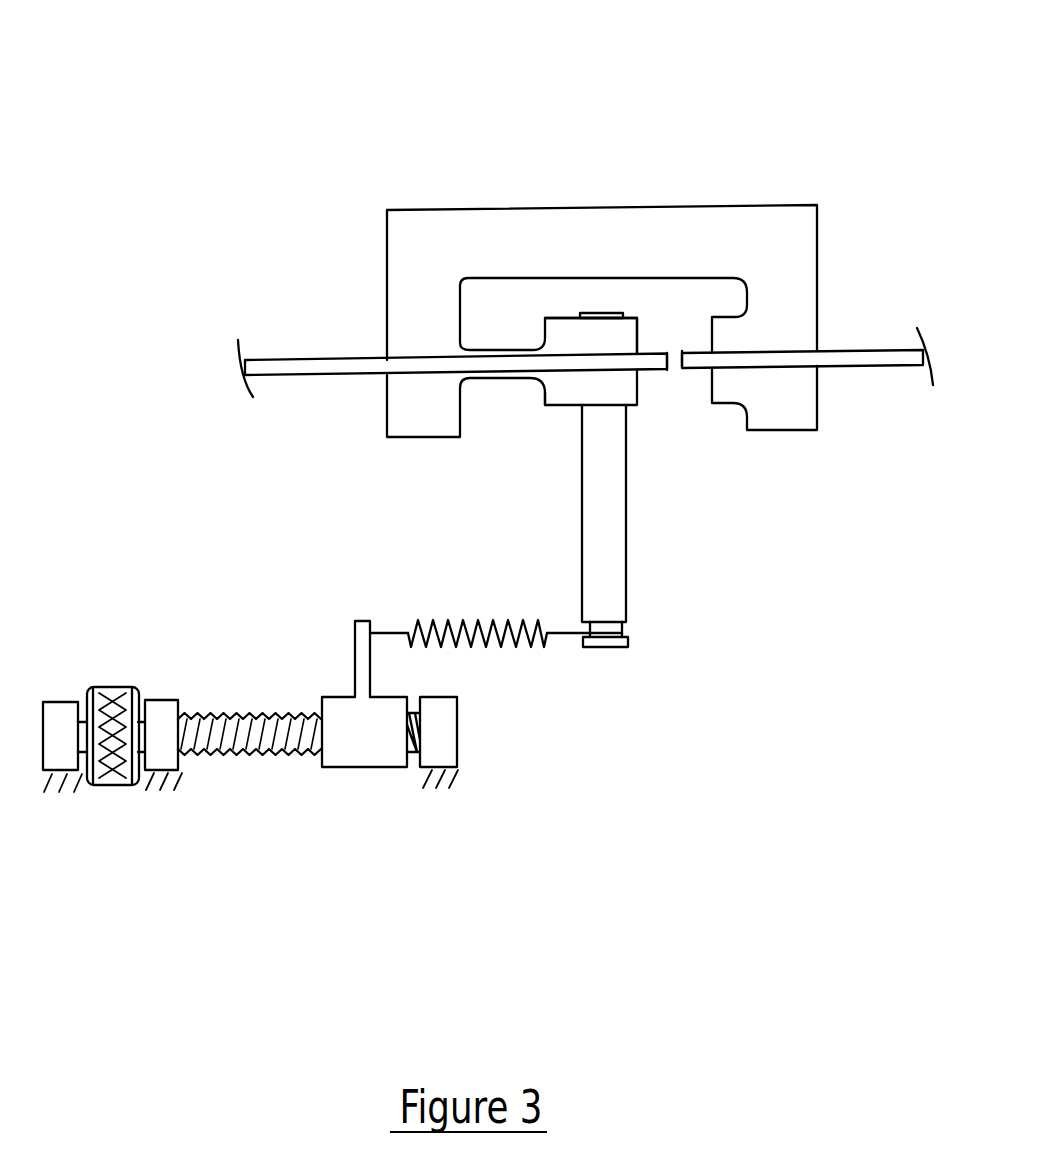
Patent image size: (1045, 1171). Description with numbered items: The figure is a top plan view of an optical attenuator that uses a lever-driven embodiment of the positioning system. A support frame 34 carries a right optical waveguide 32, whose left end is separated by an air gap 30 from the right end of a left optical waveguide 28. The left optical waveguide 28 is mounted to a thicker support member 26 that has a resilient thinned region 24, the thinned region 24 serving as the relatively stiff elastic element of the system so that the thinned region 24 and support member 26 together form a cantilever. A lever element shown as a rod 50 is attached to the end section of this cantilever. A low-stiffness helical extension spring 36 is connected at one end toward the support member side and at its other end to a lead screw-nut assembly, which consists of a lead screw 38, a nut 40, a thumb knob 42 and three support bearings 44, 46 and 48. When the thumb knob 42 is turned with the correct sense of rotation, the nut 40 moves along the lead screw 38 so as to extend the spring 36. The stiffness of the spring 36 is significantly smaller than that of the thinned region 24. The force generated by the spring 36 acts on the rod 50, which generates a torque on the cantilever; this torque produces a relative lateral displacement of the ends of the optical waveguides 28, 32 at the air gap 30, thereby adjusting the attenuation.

The resilient thinned region 24 is at (502, 347).
The support member 26 is at (630, 325).
The left optical waveguide 28 is at (318, 358).
The air gap 30 is at (673, 340).
The right optical waveguide 32 is at (867, 350).
The support frame 34 is at (792, 206).
The low-stiffness helical spring 36 is at (497, 647).
The lead screw 38 is at (240, 752).
The nut 40 is at (364, 768).
The thumb knob 42 is at (118, 783).
The support bearing 44 is at (53, 700).
The support bearing 46 is at (163, 755).
The support bearing 48 is at (445, 752).
The rod 50 is at (627, 510).